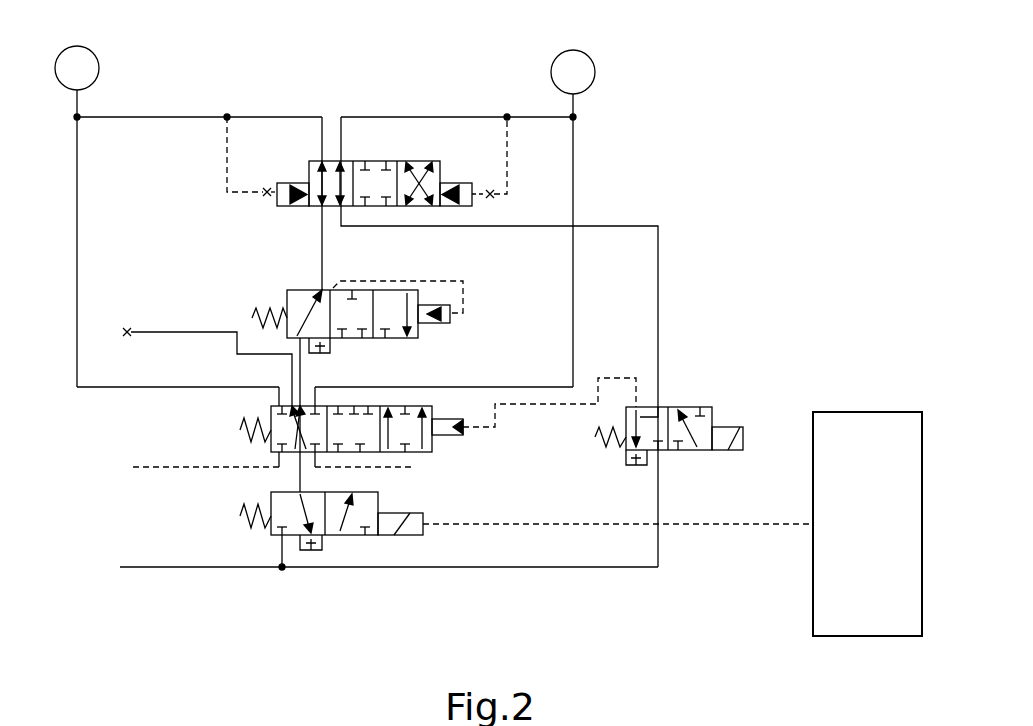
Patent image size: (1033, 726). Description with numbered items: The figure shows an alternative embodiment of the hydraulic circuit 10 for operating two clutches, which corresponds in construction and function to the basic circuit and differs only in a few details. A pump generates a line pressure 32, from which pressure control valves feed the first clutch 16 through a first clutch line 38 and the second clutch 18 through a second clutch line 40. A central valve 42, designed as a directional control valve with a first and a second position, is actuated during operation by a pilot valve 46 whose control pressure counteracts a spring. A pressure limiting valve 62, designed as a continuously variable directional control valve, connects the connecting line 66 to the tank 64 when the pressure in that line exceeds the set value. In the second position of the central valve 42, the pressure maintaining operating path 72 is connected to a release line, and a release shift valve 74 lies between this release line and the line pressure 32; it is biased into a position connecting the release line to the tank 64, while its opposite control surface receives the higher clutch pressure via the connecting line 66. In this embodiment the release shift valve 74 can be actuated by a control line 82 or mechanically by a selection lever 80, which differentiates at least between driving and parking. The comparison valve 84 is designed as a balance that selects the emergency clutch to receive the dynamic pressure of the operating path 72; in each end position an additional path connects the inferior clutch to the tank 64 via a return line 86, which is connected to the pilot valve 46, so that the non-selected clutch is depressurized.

The hydraulic circuit 10 is at (755, 120).
The first clutch 16 is at (77, 81).
The second clutch 18 is at (573, 83).
The line pressure 32 is at (238, 568).
The first clutch line 38 is at (218, 467).
The second clutch line 40 is at (355, 467).
The central valve 42 is at (262, 409).
The pilot valve 46 is at (720, 398).
The pressure limiting valve 62 is at (278, 292).
The tank 64 is at (637, 466).
The connecting line 66 is at (322, 240).
The pressure maintaining operating path 72 is at (300, 372).
The release shift valve 74 is at (354, 548).
The selection lever 80 is at (864, 412).
The control line 82 is at (577, 524).
The comparison valve 84 is at (412, 152).
The return line 86 is at (637, 226).